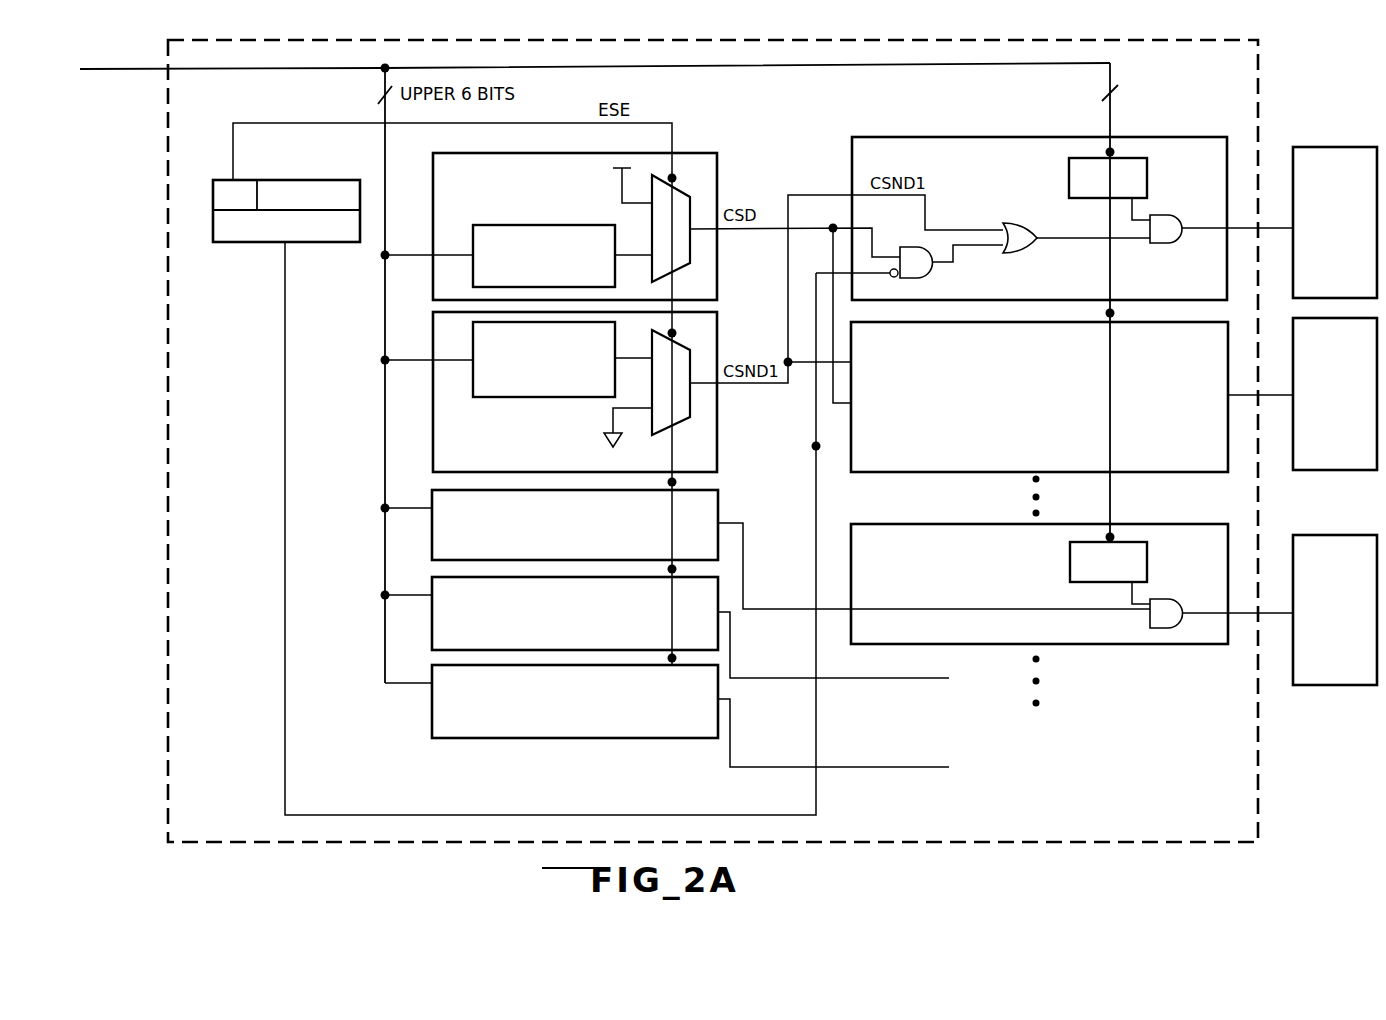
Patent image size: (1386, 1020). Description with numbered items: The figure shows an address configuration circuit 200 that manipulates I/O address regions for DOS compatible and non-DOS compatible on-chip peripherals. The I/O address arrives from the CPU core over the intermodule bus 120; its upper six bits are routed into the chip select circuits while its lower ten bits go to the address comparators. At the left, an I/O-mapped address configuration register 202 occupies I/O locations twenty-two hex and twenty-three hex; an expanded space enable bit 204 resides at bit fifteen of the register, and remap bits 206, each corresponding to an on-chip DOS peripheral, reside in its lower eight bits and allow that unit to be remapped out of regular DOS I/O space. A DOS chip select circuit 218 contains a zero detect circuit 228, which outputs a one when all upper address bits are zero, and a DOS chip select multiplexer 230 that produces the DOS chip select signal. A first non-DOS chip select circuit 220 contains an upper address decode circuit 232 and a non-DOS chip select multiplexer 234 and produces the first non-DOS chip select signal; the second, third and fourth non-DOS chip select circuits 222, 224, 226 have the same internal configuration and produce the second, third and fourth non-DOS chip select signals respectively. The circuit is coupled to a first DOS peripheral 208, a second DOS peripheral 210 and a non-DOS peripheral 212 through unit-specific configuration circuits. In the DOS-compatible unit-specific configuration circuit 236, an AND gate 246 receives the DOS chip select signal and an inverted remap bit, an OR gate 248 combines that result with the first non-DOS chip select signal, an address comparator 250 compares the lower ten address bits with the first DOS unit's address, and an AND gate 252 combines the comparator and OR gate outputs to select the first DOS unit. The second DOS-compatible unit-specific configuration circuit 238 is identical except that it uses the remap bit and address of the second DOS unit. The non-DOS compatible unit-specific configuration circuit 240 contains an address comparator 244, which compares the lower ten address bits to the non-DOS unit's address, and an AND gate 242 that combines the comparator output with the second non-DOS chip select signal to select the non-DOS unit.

The intermodule bus 120 is at (148, 75).
The address configuration circuit 200 is at (1228, 822).
The address configuration register 202 is at (252, 245).
The expanded space enable (ESE) bit 204 is at (242, 178).
The remap bits 206 is at (551, 518).
The first DOS peripheral 208 is at (1335, 222).
The second DOS peripheral 210 is at (1335, 394).
The non-DOS peripheral 212 is at (1335, 610).
The DOS chip select circuit 218 is at (575, 226).
The first non-DOS chip select circuit 220 is at (575, 392).
The second non-DOS chip select circuit 222 is at (791, 549).
The third non-DOS chip select circuit 224 is at (690, 627).
The fourth non-DOS chip select circuit 226 is at (690, 716).
The zero detect circuit 228 is at (544, 256).
The DOS chip select multiplexer 230 is at (678, 266).
The upper address decode circuit 232 is at (544, 359).
The non-DOS chip select multiplexer 234 is at (678, 420).
The DOS-compatible unit-specific configuration circuit 236 is at (1072, 218).
The second DOS-compatible unit-specific configuration circuit 238 is at (1072, 397).
The non-DOS compatible unit-specific configuration circuit 240 is at (1072, 584).
The AND gate 242 is at (1170, 598).
The address comparator 244 is at (1148, 563).
The AND gate 246 is at (930, 275).
The OR gate 248 is at (1024, 222).
The address comparator 250 is at (1148, 185).
The AND gate 252 is at (1166, 245).